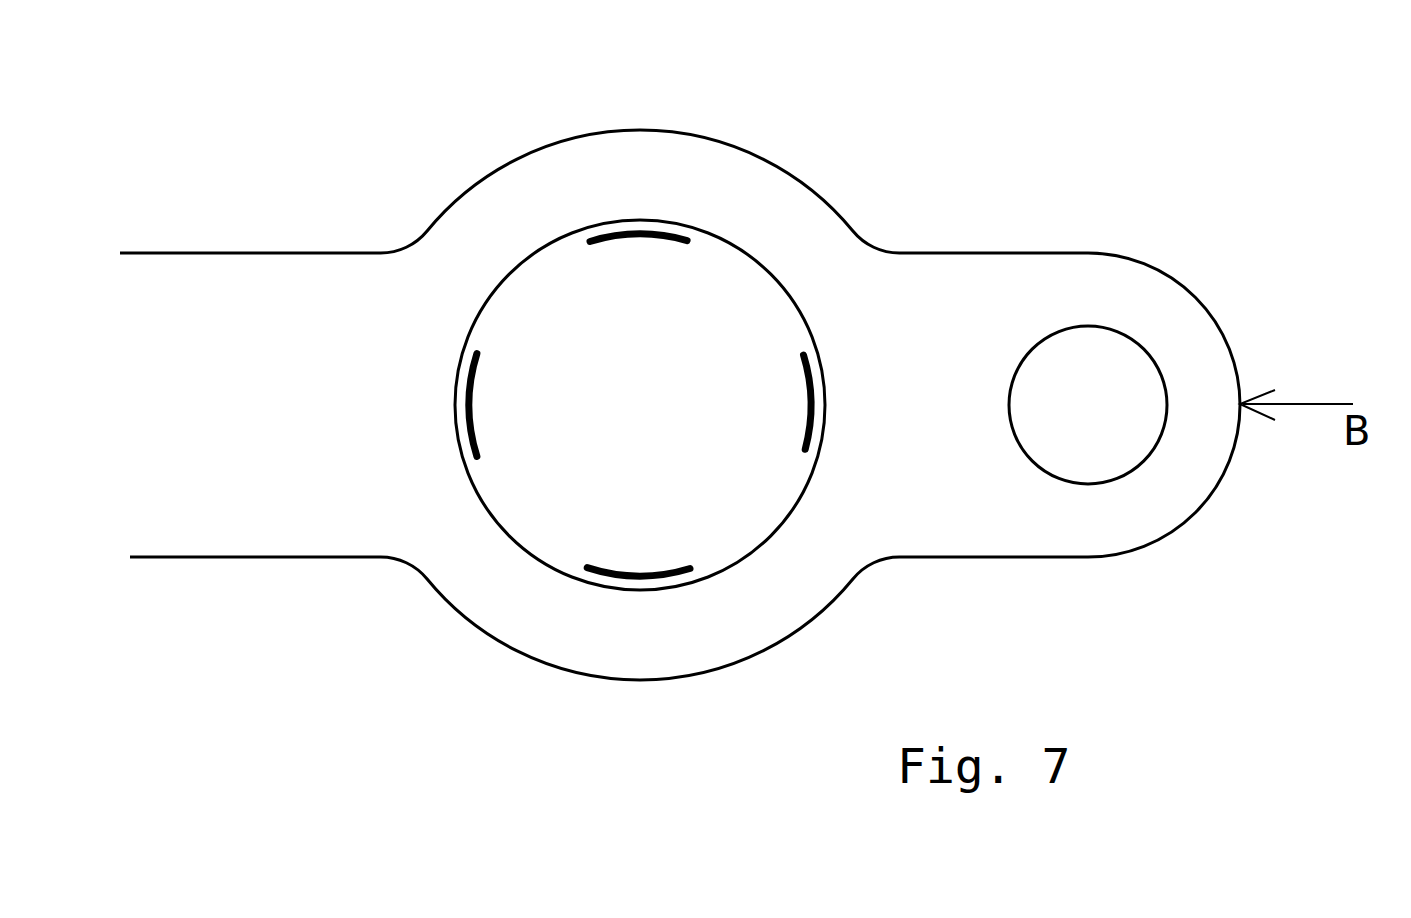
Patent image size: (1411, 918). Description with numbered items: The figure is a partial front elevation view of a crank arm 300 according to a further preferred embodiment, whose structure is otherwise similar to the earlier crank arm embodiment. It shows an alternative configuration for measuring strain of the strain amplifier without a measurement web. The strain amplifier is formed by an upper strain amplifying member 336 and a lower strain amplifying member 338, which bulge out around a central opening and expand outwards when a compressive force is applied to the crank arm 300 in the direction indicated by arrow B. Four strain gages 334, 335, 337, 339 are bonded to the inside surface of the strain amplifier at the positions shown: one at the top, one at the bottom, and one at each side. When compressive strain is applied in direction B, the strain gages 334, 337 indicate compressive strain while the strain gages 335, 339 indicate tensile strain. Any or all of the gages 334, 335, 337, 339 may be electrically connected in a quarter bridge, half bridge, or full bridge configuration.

The crank arm 300 is at (680, 388).
The strain gage 334 is at (670, 223).
The strain gage 335 is at (463, 435).
The upper strain amplifying member 336 is at (610, 150).
The strain gage 337 is at (700, 570).
The lower strain amplifying member 338 is at (610, 655).
The strain gage 339 is at (820, 378).